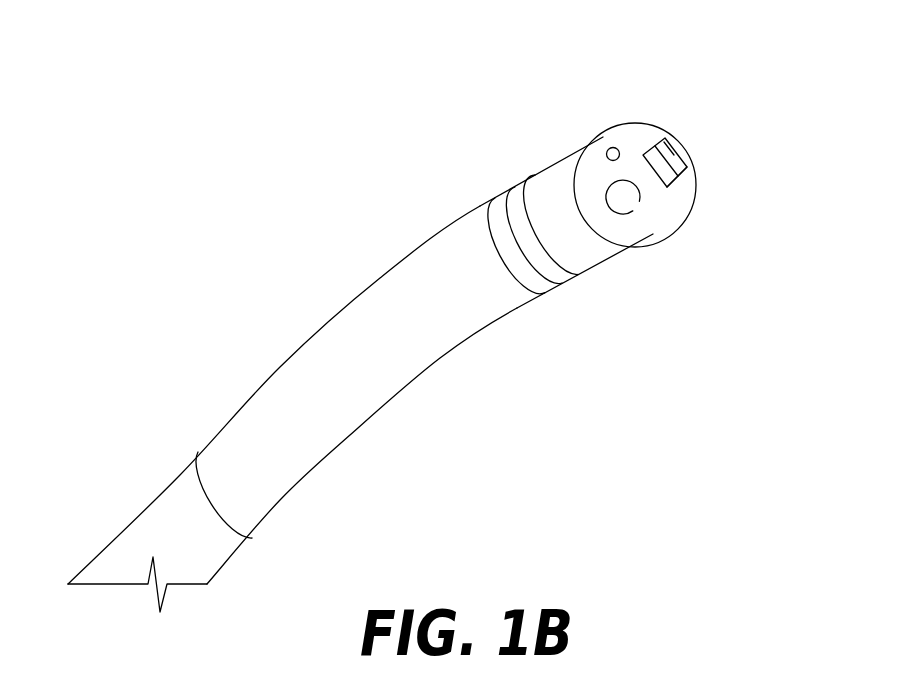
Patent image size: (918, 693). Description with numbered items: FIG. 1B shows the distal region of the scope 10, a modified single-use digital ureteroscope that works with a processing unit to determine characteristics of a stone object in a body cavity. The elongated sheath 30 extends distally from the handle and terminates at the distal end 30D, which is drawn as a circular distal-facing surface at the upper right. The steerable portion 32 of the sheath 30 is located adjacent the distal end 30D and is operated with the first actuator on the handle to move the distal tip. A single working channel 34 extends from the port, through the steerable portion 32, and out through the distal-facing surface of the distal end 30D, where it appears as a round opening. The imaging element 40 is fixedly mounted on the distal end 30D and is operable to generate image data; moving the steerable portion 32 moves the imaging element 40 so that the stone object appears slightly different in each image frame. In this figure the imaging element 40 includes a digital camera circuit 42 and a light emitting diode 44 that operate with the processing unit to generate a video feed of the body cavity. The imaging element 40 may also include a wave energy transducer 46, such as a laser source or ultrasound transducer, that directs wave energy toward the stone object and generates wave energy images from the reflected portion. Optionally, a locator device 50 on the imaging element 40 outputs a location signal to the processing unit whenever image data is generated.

The scope 10 is at (212, 295).
The elongated sheath 30 is at (160, 522).
The distal end 30D is at (637, 132).
The steerable portion 32 is at (375, 383).
The working channel 34 is at (628, 203).
The imaging element 40 is at (720, 246).
The digital camera circuit 42 is at (667, 152).
The light emitting diode 44 is at (680, 175).
The wave energy transducer 46 is at (612, 148).
The locator device 50 is at (567, 273).